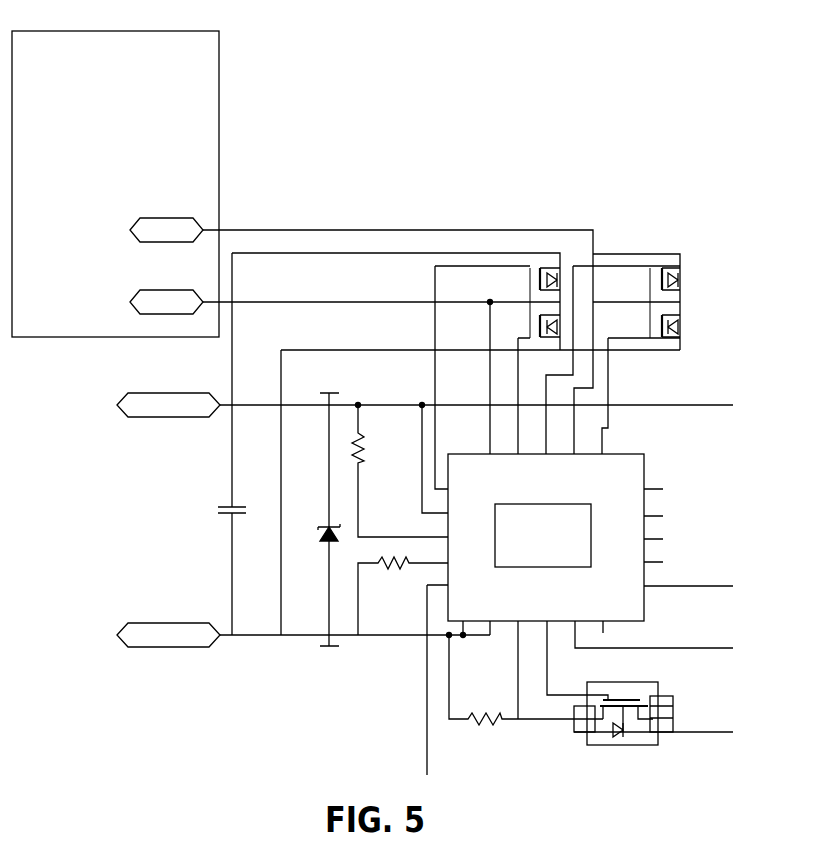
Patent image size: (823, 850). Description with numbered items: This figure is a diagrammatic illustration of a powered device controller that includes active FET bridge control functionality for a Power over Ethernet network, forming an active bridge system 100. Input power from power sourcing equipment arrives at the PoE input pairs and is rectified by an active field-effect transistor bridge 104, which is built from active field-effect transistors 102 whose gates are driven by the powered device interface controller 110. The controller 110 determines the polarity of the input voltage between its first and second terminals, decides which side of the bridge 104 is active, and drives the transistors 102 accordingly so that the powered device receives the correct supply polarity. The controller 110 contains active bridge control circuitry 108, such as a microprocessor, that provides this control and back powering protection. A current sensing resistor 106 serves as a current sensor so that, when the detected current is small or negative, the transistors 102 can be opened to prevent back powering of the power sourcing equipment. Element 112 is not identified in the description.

The active bridge system 100 is at (655, 162).
The field-effect transistor 102 is at (696, 273).
The active field-effect transistor bridge 104 is at (607, 235).
The current sensing resistor 106 is at (488, 727).
The active bridge control circuitry 108 is at (558, 538).
The powered device interface controller 110 is at (634, 479).
The connector / input module 112 is at (219, 53).